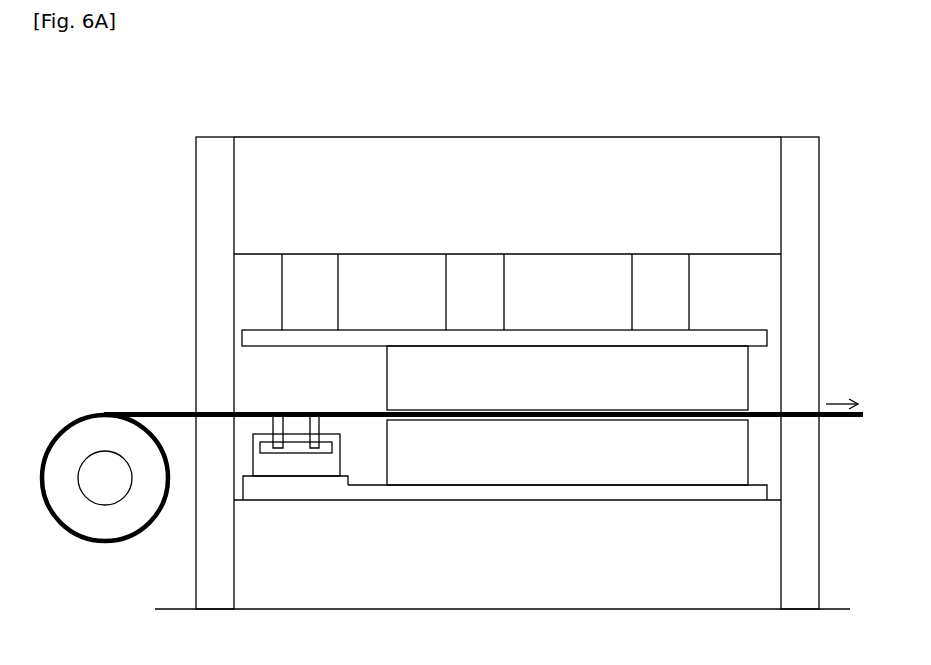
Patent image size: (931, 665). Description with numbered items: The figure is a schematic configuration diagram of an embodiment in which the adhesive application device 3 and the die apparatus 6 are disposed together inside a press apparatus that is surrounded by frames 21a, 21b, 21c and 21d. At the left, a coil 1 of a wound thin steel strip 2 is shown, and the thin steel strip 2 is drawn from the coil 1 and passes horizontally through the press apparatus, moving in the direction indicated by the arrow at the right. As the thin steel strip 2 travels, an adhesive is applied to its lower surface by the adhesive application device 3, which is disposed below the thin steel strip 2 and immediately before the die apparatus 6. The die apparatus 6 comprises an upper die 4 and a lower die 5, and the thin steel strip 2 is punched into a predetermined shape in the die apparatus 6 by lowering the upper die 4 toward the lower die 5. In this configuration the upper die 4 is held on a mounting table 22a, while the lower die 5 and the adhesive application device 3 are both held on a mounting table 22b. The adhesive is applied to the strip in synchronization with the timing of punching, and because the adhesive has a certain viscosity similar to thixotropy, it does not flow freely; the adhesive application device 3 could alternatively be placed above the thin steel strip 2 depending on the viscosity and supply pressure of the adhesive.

The coil 1 is at (80, 563).
The thin steel strip 2 is at (153, 412).
The adhesive application device 3 is at (348, 453).
The upper die 4 is at (386, 372).
The lower die 5 is at (748, 452).
The die apparatus 6 is at (762, 374).
The frame 21a is at (196, 172).
The frame 21b is at (509, 137).
The frame 21c is at (819, 172).
The frame 21d is at (546, 562).
The mounting table 22a is at (723, 330).
The mounting table 22b is at (723, 500).